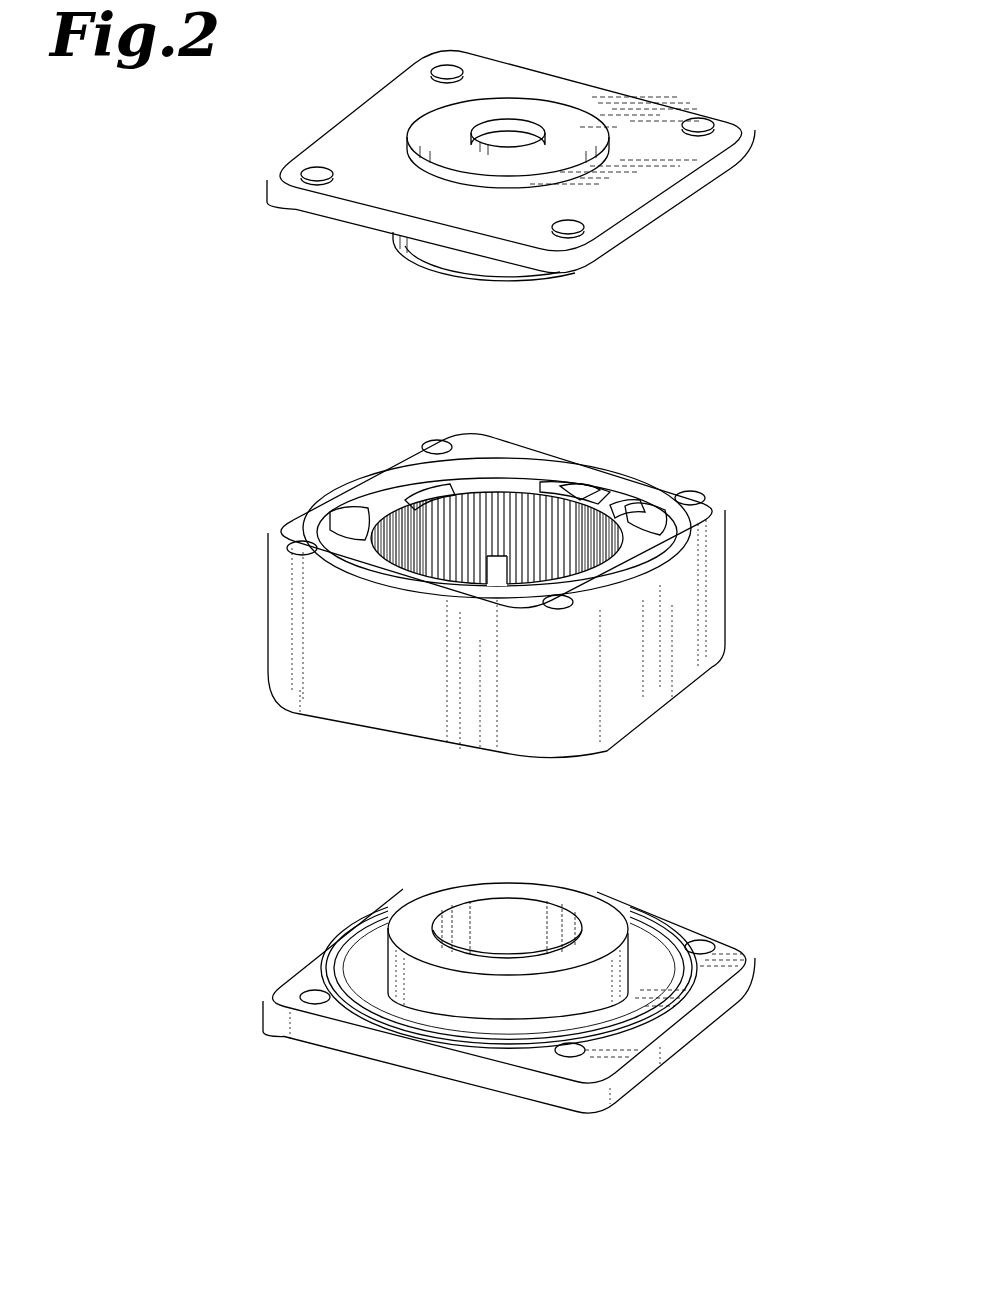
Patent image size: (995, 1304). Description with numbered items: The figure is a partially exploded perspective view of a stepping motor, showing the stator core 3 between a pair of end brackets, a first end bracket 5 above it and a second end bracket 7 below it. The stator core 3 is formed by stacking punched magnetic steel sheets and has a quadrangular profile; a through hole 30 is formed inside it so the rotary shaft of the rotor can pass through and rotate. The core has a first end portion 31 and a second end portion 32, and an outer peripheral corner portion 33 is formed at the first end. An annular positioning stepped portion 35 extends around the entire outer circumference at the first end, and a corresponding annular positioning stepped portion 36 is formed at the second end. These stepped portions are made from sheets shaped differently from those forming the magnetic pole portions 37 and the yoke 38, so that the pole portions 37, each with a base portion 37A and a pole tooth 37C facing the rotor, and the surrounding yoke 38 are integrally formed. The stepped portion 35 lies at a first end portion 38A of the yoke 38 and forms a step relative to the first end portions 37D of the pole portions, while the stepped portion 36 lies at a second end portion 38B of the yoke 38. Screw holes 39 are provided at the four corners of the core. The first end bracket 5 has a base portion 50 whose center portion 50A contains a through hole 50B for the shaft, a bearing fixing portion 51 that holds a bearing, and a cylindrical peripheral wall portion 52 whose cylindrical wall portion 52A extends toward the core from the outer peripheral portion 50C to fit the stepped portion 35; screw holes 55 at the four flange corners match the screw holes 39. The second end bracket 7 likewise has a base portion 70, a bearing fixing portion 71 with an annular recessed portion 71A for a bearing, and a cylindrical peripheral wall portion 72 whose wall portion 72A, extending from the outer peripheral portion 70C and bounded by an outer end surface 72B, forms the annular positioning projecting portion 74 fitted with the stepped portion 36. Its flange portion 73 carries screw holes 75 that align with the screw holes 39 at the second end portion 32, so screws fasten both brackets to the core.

The first end bracket 5 is at (755, 138).
The base portion 50 is at (607, 110).
The center portion 50A is at (610, 160).
The through hole 50B is at (517, 137).
The outer peripheral portion 50C is at (650, 133).
The bearing fixing portion 51 is at (515, 277).
The cylindrical peripheral wall portion 52 is at (462, 295).
The cylindrical wall portion 52A is at (416, 261).
The screw holes 55 is at (455, 66).
The stator core 3 is at (530, 581).
The through hole 30 is at (420, 597).
The first end portion 31 is at (707, 544).
The second end portion 32 is at (710, 651).
The outer peripheral corner portion 33 is at (350, 505).
The annular positioning stepped portion 35 is at (368, 460).
The annular positioning stepped portion 36 is at (337, 728).
The magnetic pole portions 37 is at (566, 488).
The base portion 37A is at (658, 511).
The pole tooth 37C is at (595, 492).
The first end portions 37D is at (451, 481).
The yoke 38 is at (666, 620).
The first end portion 38A is at (514, 440).
The second end portion 38B is at (632, 492).
The screw holes 39 is at (302, 543).
The second end bracket 7 is at (533, 1008).
The base portion 70 is at (388, 1068).
The outer peripheral portion 70C is at (497, 1050).
The bearing fixing portion 71 is at (597, 920).
The annular recessed portion 71A is at (533, 927).
The cylindrical peripheral wall portion 72 is at (503, 941).
The annular positioning projecting portion 74 is at (332, 947).
The cylindrical wall portion 72A is at (683, 1007).
The outer end surface 72B is at (630, 1047).
The flange portion 73 is at (730, 948).
The screw holes 75 is at (305, 987).